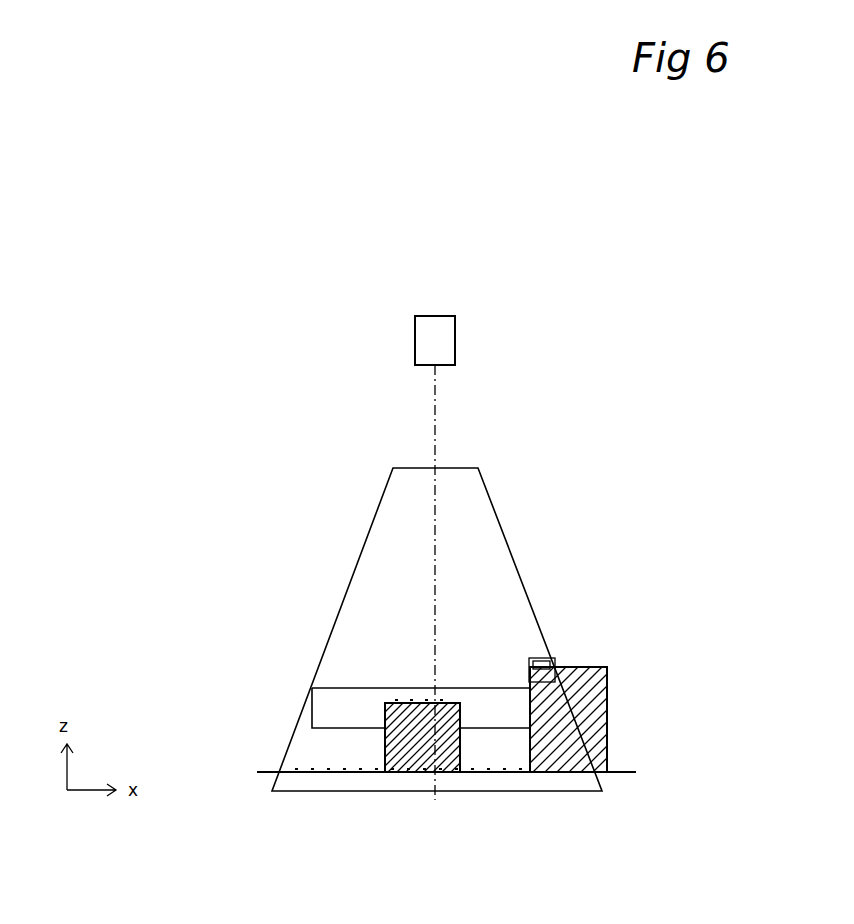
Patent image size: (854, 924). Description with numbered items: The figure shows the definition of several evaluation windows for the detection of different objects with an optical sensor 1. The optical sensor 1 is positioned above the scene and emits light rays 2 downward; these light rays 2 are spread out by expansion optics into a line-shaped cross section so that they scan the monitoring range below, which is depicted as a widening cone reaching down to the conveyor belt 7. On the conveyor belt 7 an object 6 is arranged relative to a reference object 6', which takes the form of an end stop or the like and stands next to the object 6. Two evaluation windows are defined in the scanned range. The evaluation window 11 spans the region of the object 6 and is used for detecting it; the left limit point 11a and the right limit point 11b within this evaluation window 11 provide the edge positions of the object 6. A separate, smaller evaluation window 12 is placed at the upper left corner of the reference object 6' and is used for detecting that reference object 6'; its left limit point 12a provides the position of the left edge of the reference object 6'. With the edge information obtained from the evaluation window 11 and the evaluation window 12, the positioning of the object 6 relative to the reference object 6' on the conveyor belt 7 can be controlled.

The optical sensor 1 is at (442, 337).
The light rays 2 is at (525, 592).
The object 6 is at (397, 736).
The reference object 6' is at (595, 719).
The conveyor belt 7 is at (627, 768).
The evaluation window 11 is at (345, 688).
The left limit point 11a is at (386, 702).
The right limit point 11b is at (451, 702).
The evaluation window 12 is at (541, 657).
The left limit point 12a is at (537, 667).